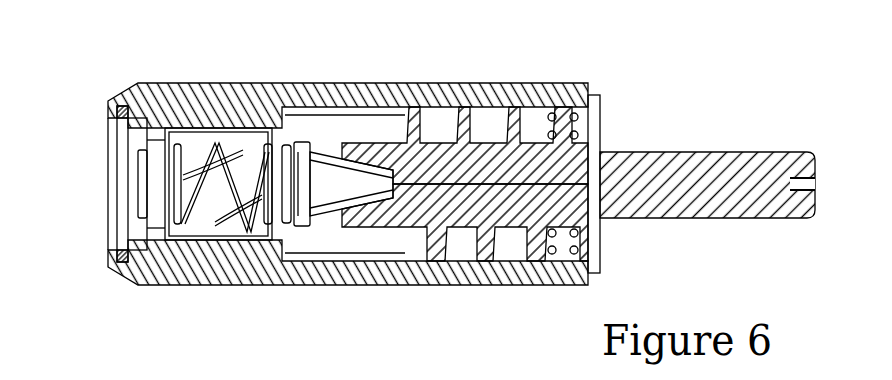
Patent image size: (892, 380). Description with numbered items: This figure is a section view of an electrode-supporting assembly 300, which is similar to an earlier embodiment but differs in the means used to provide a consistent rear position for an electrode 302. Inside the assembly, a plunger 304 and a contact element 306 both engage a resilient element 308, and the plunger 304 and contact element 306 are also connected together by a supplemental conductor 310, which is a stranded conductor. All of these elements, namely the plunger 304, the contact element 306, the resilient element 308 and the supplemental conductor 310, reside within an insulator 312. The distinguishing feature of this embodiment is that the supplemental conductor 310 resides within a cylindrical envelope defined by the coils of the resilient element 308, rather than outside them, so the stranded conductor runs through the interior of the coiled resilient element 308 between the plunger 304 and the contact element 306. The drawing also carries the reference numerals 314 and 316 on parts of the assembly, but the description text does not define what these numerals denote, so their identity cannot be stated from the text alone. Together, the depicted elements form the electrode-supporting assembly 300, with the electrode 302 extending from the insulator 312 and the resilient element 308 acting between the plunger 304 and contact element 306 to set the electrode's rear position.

The electrode-supporting assembly 300 is at (656, 86).
The electrode 302 is at (765, 168).
The plunger 304 is at (303, 128).
The contact element 306 is at (129, 165).
The resilient element 308 is at (218, 148).
The supplemental conductor 310 is at (238, 265).
The insulator 312 is at (518, 92).
The spring retainer 314 is at (265, 150).
The spring cage 316 is at (200, 236).